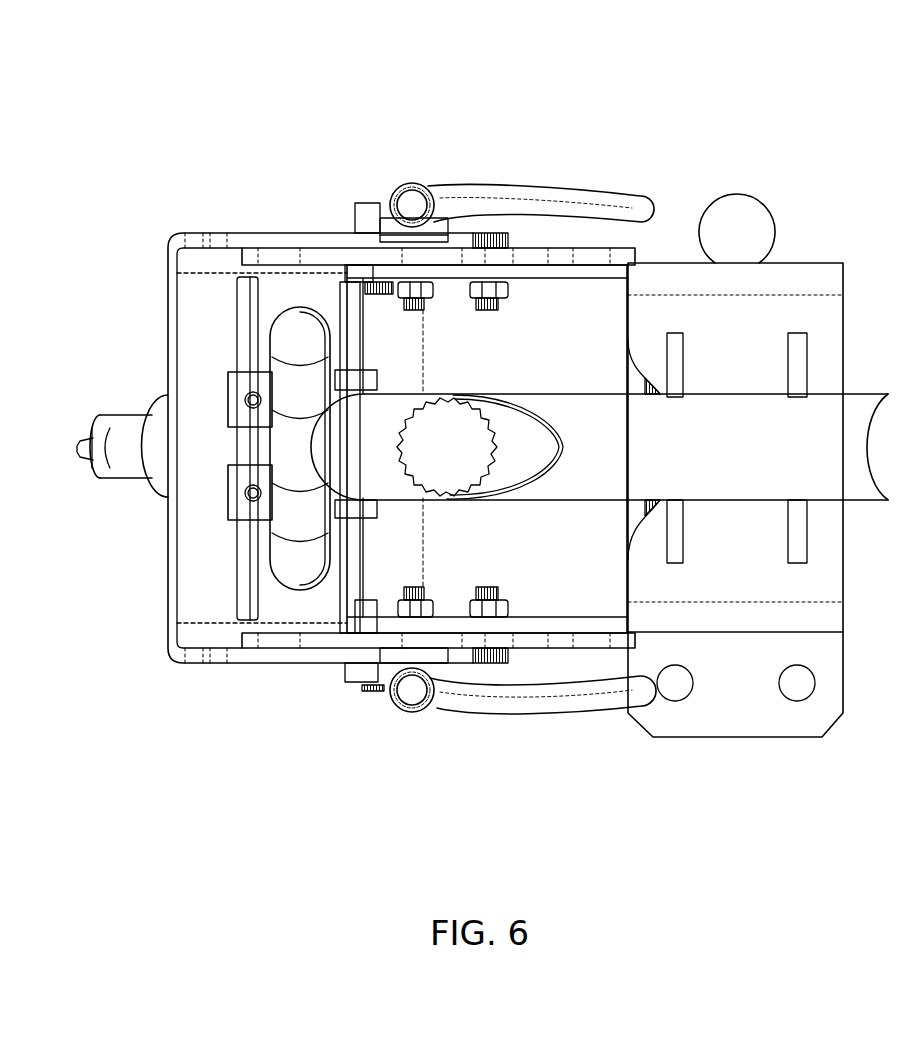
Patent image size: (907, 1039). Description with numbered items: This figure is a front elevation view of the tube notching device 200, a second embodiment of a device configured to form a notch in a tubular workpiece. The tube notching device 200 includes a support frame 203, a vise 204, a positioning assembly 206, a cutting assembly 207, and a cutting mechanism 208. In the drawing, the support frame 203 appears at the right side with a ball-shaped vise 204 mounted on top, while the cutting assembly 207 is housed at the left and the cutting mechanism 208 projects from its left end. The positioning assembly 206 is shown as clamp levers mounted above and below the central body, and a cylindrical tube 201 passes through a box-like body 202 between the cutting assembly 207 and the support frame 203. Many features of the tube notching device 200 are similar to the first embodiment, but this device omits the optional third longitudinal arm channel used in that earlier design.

The tube notching device 200 is at (255, 82).
The cylindrical tube 201 is at (530, 398).
The housing body 202 is at (573, 407).
The support frame 203 is at (836, 246).
The vise 204 is at (718, 190).
The positioning assembly 206 is at (485, 170).
The cutting assembly 207 is at (244, 220).
The cutting mechanism 208 is at (130, 500).